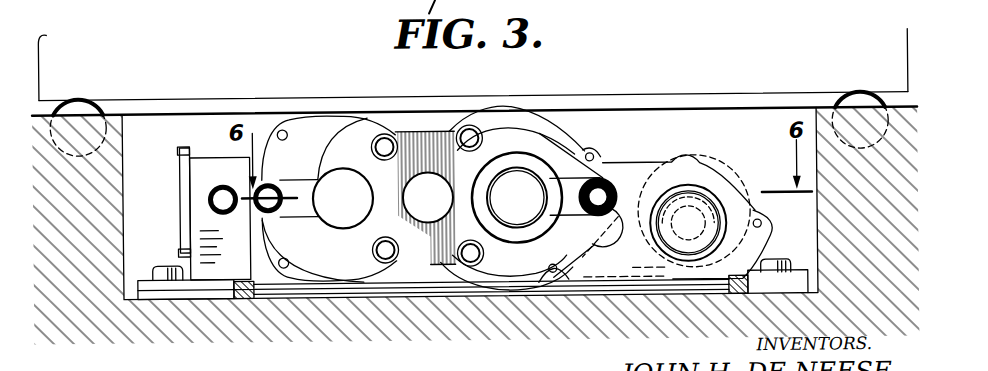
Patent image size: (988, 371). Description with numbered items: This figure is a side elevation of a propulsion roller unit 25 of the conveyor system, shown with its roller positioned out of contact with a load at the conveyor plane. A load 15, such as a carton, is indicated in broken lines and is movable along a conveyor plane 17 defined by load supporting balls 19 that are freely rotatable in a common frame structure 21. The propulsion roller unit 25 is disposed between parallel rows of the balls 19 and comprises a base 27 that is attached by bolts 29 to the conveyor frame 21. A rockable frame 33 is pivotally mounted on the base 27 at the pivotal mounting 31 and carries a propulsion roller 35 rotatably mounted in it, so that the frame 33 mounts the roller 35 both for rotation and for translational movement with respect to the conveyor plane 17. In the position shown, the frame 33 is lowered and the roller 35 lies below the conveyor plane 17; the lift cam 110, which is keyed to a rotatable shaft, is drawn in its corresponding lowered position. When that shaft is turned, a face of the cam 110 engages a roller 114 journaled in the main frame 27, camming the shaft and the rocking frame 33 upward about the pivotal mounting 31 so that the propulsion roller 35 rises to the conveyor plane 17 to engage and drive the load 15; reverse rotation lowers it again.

The load 15 is at (50, 30).
The conveyor plane 17 is at (262, 96).
The balls 19 is at (86, 100).
The frame structure 21 is at (87, 295).
The propulsion roller unit 25 is at (748, 110).
The base 27 is at (172, 286).
The bolts 29 is at (158, 262).
The pivotal mounting 31 is at (210, 197).
The rockable frame 33 is at (432, 132).
The propulsion roller 35 is at (566, 136).
The lift cam 110 is at (672, 156).
The roller 114 is at (626, 267).